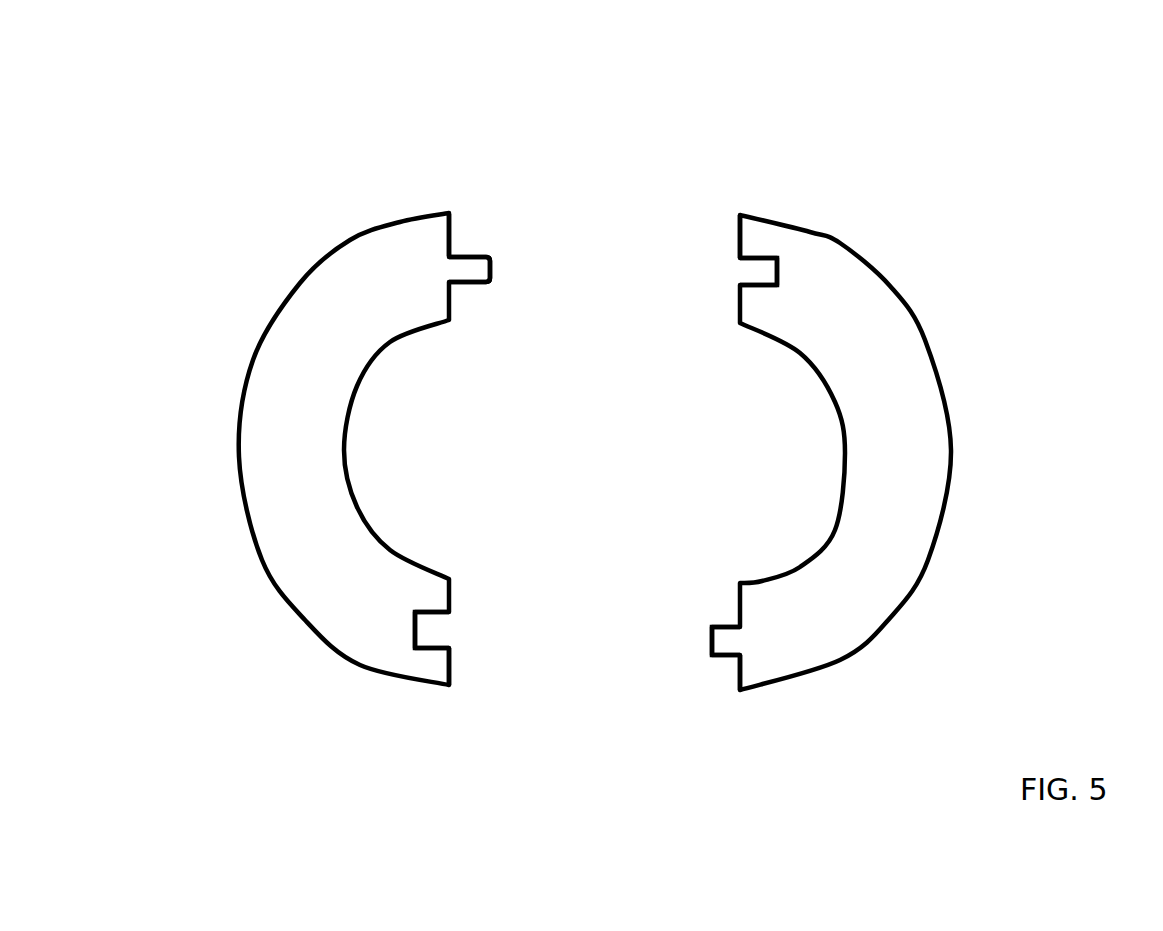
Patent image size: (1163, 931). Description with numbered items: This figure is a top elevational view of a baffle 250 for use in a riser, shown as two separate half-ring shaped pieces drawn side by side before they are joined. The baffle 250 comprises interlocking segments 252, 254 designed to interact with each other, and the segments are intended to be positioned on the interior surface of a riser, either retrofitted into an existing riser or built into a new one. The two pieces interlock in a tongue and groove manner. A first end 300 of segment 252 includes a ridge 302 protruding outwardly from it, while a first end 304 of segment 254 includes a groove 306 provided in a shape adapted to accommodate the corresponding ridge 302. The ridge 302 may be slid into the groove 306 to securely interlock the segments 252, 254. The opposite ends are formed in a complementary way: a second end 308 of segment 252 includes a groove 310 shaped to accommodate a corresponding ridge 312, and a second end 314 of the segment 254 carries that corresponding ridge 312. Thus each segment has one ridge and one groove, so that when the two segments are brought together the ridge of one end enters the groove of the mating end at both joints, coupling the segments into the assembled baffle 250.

The baffle 250 is at (1044, 128).
The first segment 252 is at (286, 356).
The second segment 254 is at (878, 297).
The first end of segment 252 300 is at (452, 231).
The ridge 302 is at (478, 252).
The first end of segment 254 304 is at (737, 232).
The groove 306 is at (752, 268).
The second end of segment 252 308 is at (453, 670).
The groove 310 is at (430, 632).
The ridge 312 is at (712, 657).
The second end of segment 254 314 is at (738, 587).